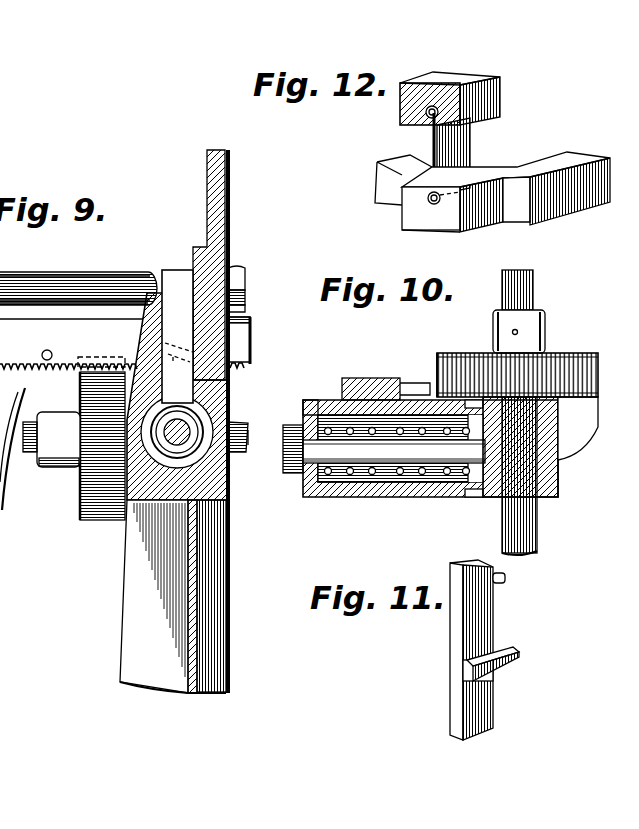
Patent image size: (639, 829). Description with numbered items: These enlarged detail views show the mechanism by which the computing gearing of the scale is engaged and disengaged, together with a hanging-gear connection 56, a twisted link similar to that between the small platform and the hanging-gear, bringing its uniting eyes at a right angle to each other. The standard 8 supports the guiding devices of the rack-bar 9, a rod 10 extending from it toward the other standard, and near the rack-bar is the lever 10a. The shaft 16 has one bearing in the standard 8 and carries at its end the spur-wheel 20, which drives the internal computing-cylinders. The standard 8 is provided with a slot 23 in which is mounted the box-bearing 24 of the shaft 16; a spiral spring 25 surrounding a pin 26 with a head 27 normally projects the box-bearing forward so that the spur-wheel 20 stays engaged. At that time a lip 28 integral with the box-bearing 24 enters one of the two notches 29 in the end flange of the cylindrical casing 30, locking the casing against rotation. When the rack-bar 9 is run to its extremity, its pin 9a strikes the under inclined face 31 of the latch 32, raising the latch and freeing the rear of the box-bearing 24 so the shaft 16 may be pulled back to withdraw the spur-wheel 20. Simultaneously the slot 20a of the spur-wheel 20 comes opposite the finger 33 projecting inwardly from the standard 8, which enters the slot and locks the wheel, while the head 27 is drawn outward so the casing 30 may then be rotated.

In FIG. 9, the standard 8 is at (232, 245).
In FIG. 10, the standard 8 is at (312, 400).
In FIG. 9, the rack-bar 9 is at (125, 343).
In FIG. 9, the pin 9a is at (53, 352).
In FIG. 9, the rod 10 is at (103, 279).
In FIG. 9, the lever arm 10a is at (10, 380).
In FIG. 9, the shaft 16 is at (38, 437).
In FIG. 10, the shaft 16 is at (537, 517).
In FIG. 9, the spur-wheel 20 is at (107, 503).
In FIG. 10, the spur-wheel 20 is at (517, 360).
In FIG. 10, the slot 20a is at (433, 377).
In FIG. 10, the slot 23 is at (473, 497).
In FIG. 9, the box-bearing 24 is at (232, 458).
In FIG. 10, the box-bearing 24 is at (558, 481).
In FIG. 9, the spiral spring 25 is at (198, 412).
In FIG. 10, the spiral spring 25 is at (313, 502).
In FIG. 9, the pin 26 is at (187, 442).
In FIG. 10, the pin 26 is at (395, 456).
In FIG. 9, the head 27 is at (252, 470).
In FIG. 9, the lip 28 is at (2, 468).
In FIG. 10, the lip 28 is at (577, 421).
In FIG. 9, the notch 29 is at (7, 503).
In FIG. 9, the cylindrical casing 30 is at (11, 568).
In FIG. 9, the inclined face 31 is at (179, 367).
In FIG. 11, the inclined face 31 is at (500, 663).
In FIG. 9, the latch 32 is at (177, 336).
In FIG. 11, the latch 32 is at (457, 632).
In FIG. 10, the finger 33 is at (408, 388).
In FIG. 12, the connection 56 is at (431, 142).